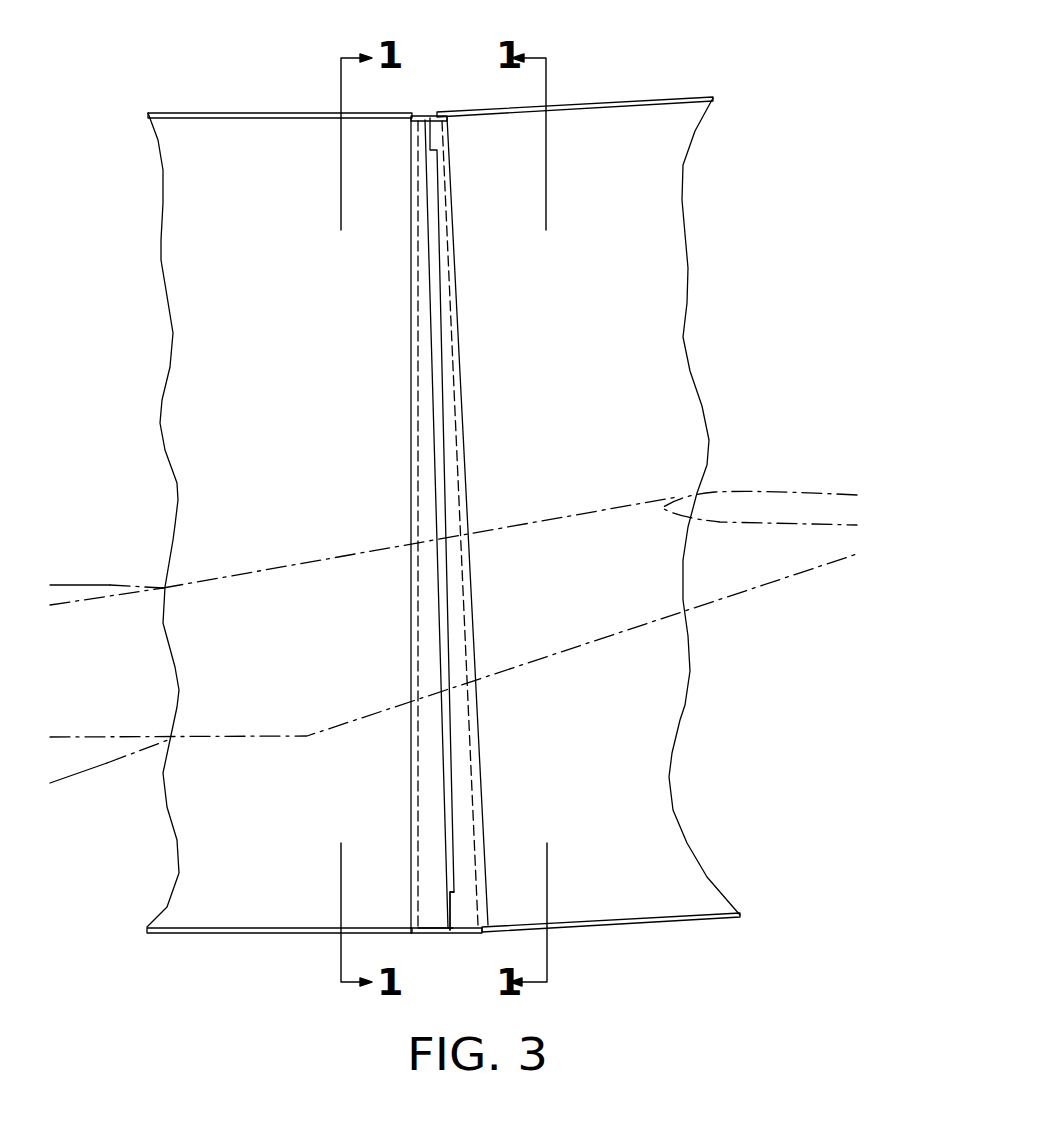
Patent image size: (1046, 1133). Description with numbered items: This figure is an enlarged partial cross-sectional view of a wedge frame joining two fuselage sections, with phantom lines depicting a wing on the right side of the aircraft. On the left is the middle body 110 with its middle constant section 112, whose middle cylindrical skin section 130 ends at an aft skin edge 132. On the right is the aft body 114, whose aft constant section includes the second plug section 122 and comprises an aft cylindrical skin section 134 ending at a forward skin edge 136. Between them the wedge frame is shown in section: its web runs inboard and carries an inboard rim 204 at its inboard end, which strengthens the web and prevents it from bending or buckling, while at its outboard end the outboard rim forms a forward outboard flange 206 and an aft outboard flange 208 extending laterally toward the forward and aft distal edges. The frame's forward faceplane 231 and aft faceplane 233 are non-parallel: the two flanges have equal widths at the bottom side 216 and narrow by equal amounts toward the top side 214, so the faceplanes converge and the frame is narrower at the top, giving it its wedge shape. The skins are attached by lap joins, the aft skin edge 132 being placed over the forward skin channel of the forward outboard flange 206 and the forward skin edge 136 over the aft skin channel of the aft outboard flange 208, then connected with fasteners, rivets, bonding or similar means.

The middle body 110 is at (212, 88).
The middle constant section 112 is at (255, 476).
The aft body 114 is at (602, 50).
The second plug section 122 is at (595, 336).
The middle cylindrical skin section 130 is at (308, 110).
The aft skin edge 132 is at (413, 112).
The aft cylindrical skin section 134 is at (655, 97).
The forward skin edge 136 is at (443, 113).
The inboard rim 204 is at (455, 768).
The forward outboard flange 206 is at (427, 935).
The aft outboard flange 208 is at (455, 927).
The top side 214 is at (427, 106).
The bottom side 216 is at (450, 945).
The forward faceplane 231 is at (395, 391).
The aft faceplane 233 is at (480, 390).